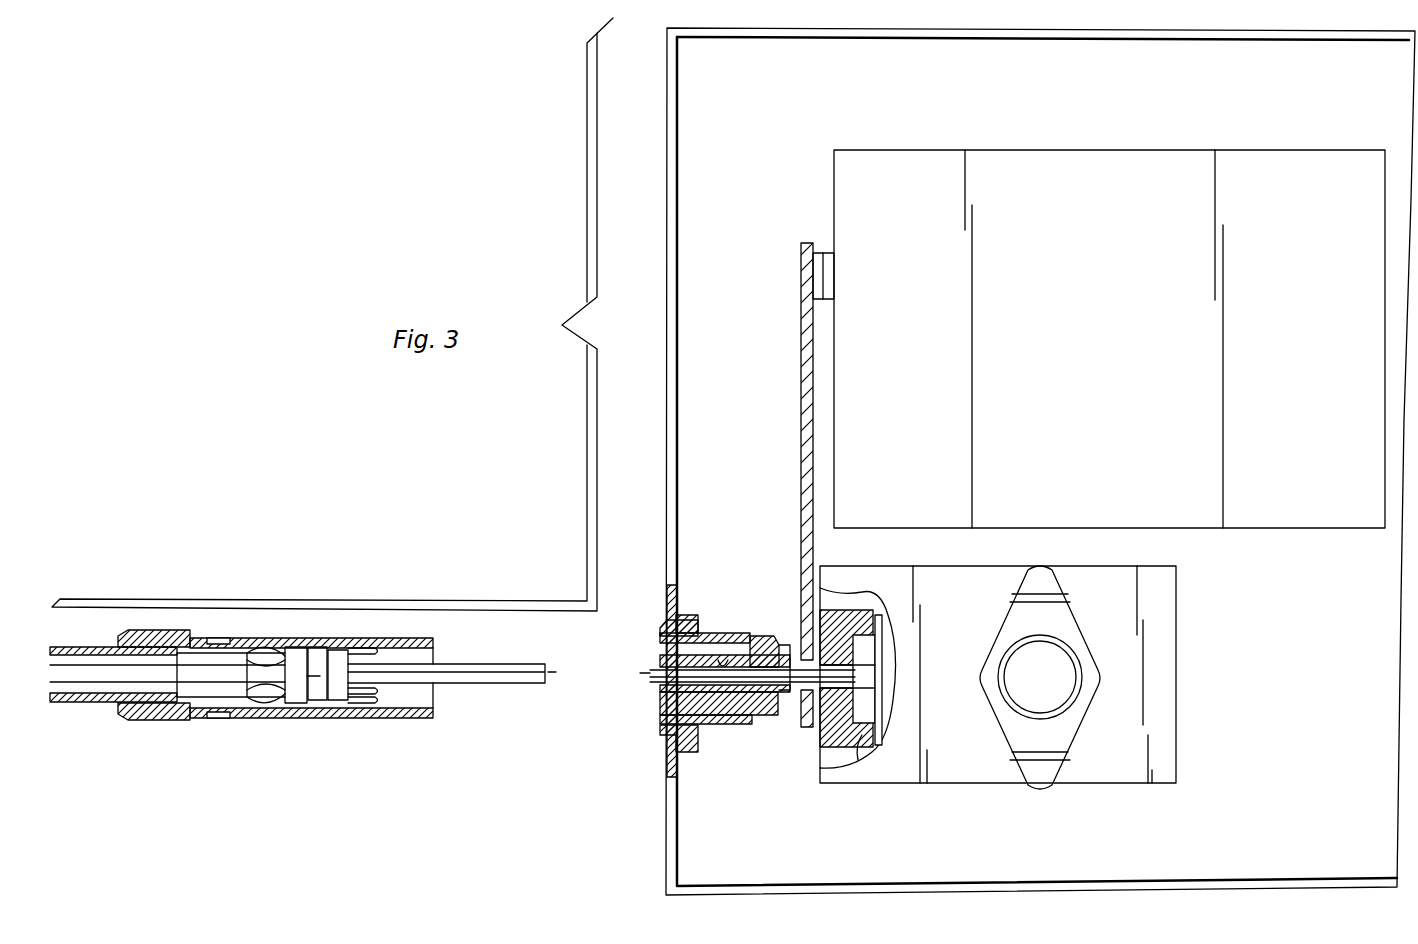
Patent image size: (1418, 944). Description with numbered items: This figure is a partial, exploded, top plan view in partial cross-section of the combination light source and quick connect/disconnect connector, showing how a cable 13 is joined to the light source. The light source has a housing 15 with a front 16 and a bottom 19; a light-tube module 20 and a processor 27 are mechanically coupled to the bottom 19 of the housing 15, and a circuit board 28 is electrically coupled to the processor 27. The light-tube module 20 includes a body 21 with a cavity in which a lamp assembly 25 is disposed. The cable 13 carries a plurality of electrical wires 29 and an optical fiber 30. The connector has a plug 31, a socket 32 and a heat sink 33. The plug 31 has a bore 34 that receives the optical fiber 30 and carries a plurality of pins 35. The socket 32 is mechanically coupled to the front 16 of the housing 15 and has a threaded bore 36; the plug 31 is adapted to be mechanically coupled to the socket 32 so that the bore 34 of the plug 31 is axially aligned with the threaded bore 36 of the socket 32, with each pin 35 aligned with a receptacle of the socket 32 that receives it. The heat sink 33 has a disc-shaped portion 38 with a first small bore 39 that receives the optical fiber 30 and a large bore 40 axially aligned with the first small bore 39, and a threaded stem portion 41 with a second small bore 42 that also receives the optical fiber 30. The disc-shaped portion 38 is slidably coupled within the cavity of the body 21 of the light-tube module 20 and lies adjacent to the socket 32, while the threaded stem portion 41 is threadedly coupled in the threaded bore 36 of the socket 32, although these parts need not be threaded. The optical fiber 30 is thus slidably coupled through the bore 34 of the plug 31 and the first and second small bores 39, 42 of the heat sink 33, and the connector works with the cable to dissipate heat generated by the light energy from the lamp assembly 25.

The cable 13 is at (82, 700).
The housing 15 is at (697, 222).
The front 16 is at (667, 358).
The bottom 19 is at (1298, 735).
The light-tube module 20 is at (1040, 711).
The body 21 is at (1108, 773).
The lamp assembly 25 is at (1030, 772).
The processor 27 is at (1128, 311).
The circuit board 28 is at (800, 385).
The electrical wires 29 is at (268, 700).
The optical fiber 30 is at (455, 683).
The plug 31 is at (290, 636).
The socket 32 is at (662, 718).
The heat sink 33 is at (840, 717).
The bore 34 is at (248, 668).
The pins 35 is at (380, 690).
The threaded bore 36 is at (750, 667).
The disc-shaped portion 38 is at (866, 597).
The first small bore 39 is at (862, 735).
The large bore 40 is at (855, 653).
The threaded stem portion 41 is at (783, 655).
The second small bore 42 is at (722, 660).